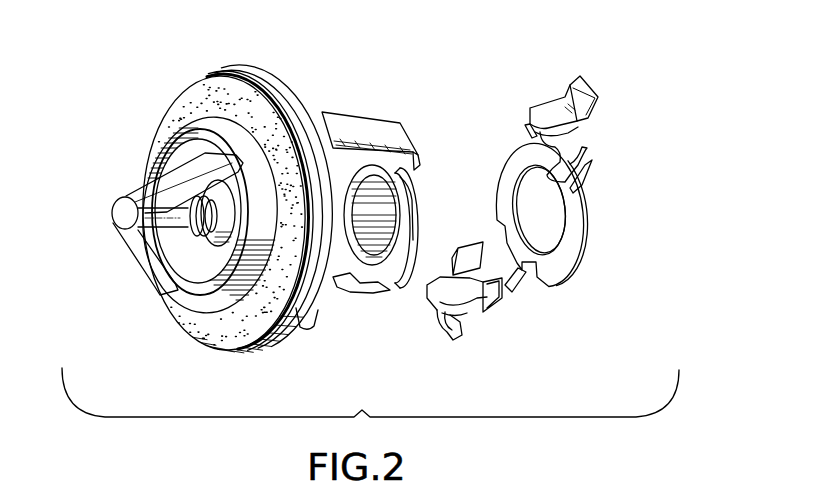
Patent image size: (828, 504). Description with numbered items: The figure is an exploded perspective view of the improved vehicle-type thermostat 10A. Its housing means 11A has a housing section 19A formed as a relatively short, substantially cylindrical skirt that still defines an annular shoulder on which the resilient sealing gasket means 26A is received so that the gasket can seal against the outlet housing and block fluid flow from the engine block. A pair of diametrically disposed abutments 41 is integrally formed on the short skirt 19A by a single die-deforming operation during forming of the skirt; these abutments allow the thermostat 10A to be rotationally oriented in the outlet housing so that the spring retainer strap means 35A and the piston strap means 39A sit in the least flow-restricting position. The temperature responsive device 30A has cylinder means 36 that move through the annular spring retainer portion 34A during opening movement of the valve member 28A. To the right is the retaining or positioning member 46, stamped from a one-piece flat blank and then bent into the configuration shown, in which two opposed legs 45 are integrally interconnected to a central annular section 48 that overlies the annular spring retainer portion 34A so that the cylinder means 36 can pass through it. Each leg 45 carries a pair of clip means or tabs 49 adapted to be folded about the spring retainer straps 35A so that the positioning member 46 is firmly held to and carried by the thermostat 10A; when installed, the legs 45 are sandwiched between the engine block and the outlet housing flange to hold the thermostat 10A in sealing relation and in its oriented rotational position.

The thermostat 10A is at (172, 72).
The housing means 11A is at (249, 359).
The housing section 19A is at (267, 65).
The resilient sealing gasket means 26A is at (207, 327).
The valve member 28A is at (210, 273).
The temperature responsive device 30A is at (343, 165).
The annular spring retainer portion 34A is at (418, 180).
The spring retainer strap means 35A is at (375, 127).
The cylinder means 36 is at (360, 234).
The piston strap means 39A is at (128, 252).
The abutments 41 is at (317, 318).
The legs 45 is at (548, 107).
The positioning member 46 is at (584, 238).
The central annular section 48 is at (587, 213).
The clip means or tabs 49 is at (530, 133).